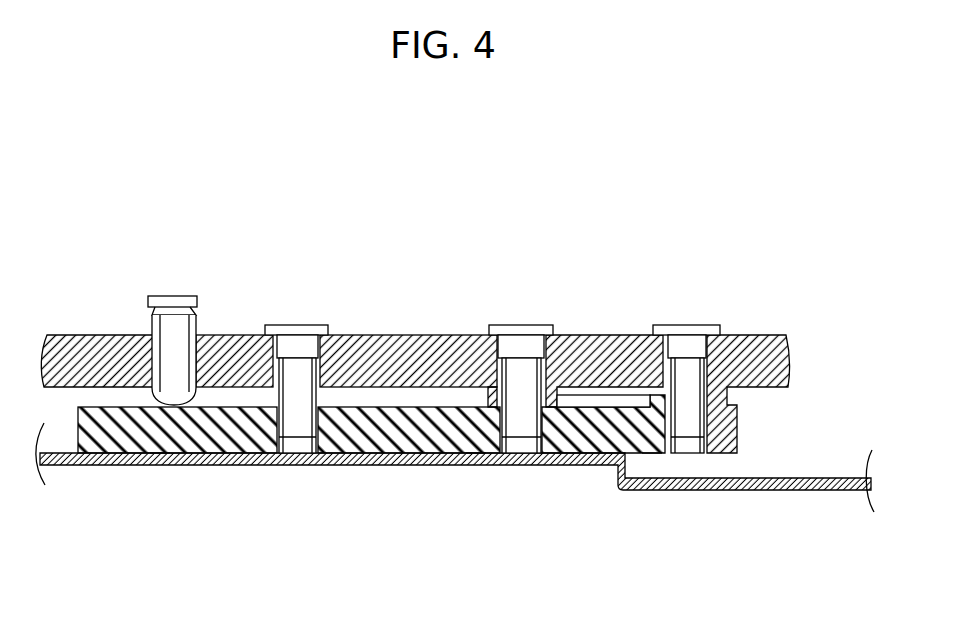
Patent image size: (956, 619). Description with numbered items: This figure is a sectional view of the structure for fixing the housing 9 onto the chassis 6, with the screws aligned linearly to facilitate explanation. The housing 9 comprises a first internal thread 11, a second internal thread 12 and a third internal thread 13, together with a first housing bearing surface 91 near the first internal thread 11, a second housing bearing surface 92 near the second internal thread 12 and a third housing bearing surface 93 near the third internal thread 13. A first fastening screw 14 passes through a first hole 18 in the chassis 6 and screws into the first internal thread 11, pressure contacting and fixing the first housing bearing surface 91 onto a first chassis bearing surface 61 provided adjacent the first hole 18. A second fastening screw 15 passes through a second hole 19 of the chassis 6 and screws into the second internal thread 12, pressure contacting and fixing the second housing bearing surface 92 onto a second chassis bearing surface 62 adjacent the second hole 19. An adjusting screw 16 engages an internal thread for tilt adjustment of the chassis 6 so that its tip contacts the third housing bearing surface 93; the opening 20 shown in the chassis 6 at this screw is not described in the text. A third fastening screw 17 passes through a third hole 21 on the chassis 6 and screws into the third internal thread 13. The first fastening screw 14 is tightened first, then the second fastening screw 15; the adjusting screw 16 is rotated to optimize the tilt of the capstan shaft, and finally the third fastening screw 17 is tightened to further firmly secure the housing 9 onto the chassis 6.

The chassis 6 is at (413, 316).
The housing 9 is at (455, 477).
The first internal thread 11 is at (700, 453).
The second internal thread 12 is at (500, 462).
The third internal thread 13 is at (270, 462).
The first fastening screw 14 is at (702, 387).
The second fastening screw 15 is at (510, 325).
The adjusting screw 16 is at (170, 296).
The third fastening screw 17 is at (300, 325).
The first hole 18 is at (662, 338).
The second hole 19 is at (474, 335).
The pin hole 20 is at (150, 333).
The third hole 21 is at (262, 335).
The first chassis bearing surface 61 is at (733, 337).
The second chassis bearing surface 62 is at (558, 335).
The first housing bearing surface 91 is at (652, 453).
The second housing bearing surface 92 is at (476, 453).
The third housing bearing surface 93 is at (178, 407).